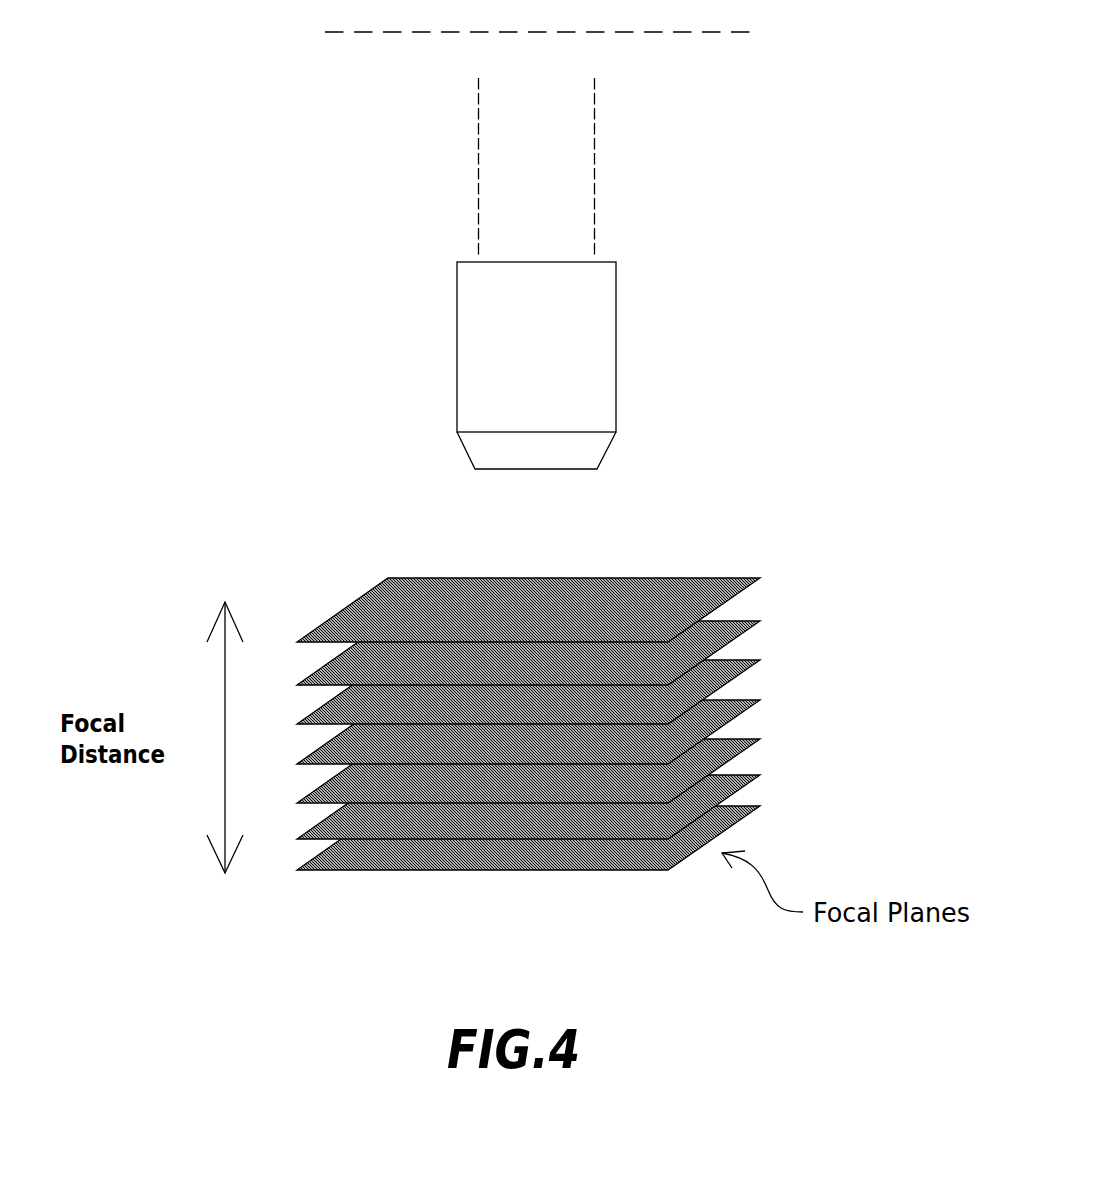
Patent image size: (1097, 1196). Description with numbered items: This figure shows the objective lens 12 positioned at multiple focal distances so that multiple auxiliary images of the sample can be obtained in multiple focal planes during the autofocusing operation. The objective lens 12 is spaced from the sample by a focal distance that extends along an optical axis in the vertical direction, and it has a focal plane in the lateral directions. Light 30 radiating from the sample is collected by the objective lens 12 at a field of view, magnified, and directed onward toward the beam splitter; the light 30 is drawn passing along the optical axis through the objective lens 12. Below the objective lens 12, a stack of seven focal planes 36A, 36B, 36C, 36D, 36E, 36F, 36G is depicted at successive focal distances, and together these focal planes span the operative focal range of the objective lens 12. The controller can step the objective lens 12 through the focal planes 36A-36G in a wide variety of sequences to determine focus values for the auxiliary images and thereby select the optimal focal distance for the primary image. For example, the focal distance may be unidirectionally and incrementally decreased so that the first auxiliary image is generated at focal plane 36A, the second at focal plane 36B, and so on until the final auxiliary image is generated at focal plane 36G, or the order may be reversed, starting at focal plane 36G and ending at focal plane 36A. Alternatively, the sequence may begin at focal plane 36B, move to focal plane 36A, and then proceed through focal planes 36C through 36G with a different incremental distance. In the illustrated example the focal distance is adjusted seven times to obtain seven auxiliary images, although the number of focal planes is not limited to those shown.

The light 30 is at (594, 170).
The objective lens 12 is at (616, 348).
The focal plane 36A is at (770, 580).
The focal plane 36B is at (770, 623).
The focal plane 36C is at (770, 662).
The focal plane 36D is at (770, 702).
The focal plane 36E is at (770, 741).
The focal plane 36F is at (770, 777).
The focal plane 36G is at (770, 808).